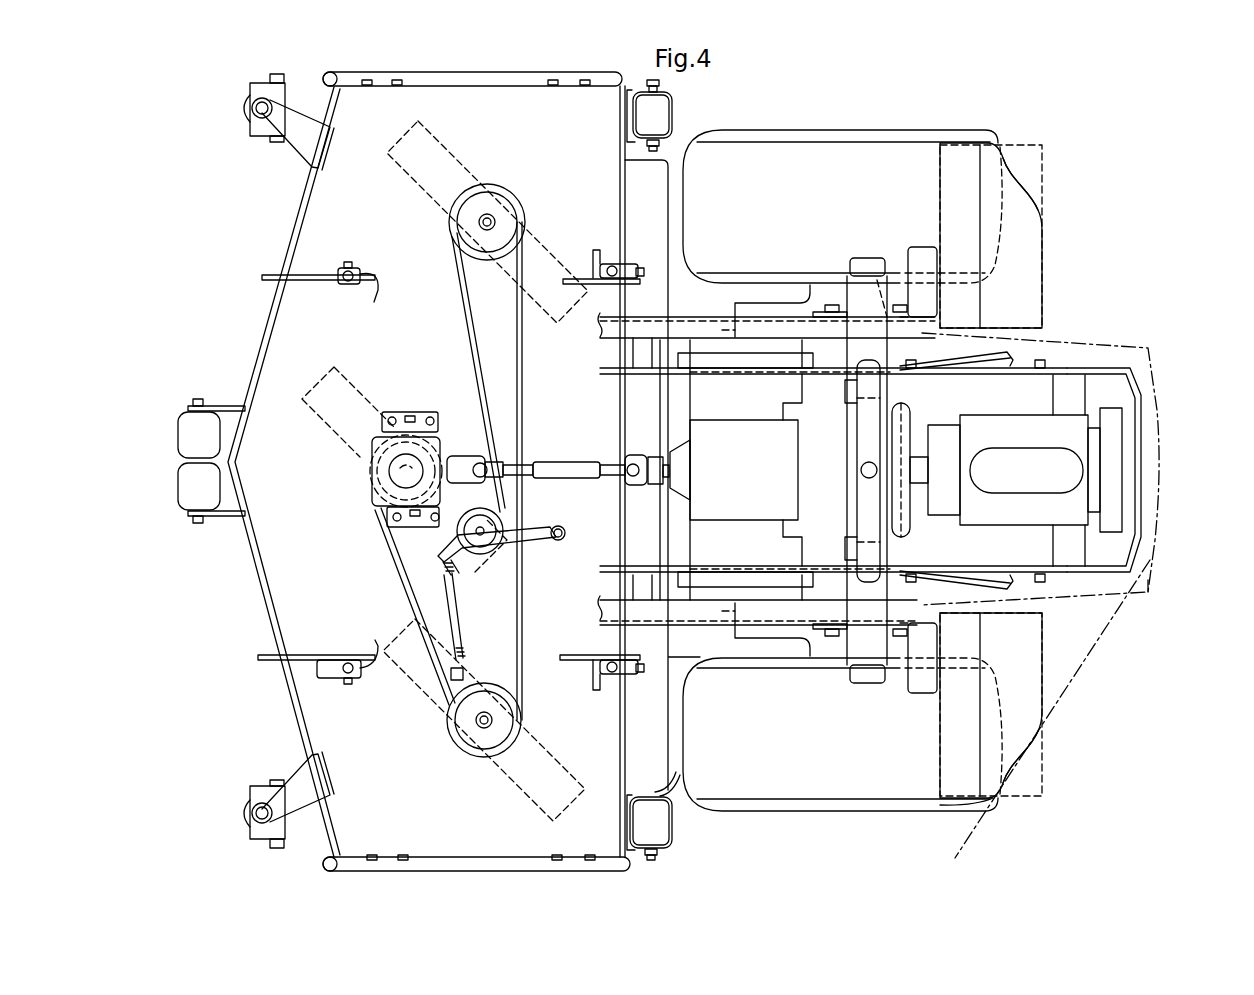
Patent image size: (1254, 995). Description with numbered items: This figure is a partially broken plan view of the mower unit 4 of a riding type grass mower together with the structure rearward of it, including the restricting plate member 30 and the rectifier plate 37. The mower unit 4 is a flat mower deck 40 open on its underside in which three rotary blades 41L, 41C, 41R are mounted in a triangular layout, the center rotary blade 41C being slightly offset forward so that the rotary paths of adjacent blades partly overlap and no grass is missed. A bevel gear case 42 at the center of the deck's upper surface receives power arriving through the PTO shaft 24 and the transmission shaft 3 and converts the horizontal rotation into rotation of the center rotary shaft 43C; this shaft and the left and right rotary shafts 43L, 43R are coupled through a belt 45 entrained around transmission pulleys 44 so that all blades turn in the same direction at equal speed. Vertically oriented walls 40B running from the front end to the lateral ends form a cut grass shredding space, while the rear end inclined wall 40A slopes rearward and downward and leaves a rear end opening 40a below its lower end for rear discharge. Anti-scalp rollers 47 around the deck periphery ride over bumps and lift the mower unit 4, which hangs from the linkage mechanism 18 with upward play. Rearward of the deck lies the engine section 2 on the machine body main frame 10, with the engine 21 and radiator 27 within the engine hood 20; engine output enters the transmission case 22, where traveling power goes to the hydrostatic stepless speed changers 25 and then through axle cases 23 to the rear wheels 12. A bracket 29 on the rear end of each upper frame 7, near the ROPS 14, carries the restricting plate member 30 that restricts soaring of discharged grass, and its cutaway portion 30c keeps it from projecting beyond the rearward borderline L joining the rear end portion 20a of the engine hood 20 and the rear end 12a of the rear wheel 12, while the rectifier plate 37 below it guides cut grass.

The engine section 2 is at (1176, 379).
The transmission shaft 3 is at (566, 462).
The mower unit 4 is at (229, 718).
The upper frame 7 is at (705, 345).
The machine body main frame 10 is at (973, 378).
The rear wheel 12 is at (838, 132).
The rear end of rear wheel 12a is at (997, 806).
The ROPS 14 is at (866, 257).
The linkage mechanism 18 is at (300, 282).
The engine hood 20 is at (1100, 337).
The rear end portion of engine hood 20a is at (1148, 595).
The engine 21 is at (1113, 475).
The transmission case 22 is at (795, 458).
The axle case 23 is at (770, 303).
The PTO shaft 24 is at (672, 470).
The hydrostatic stepless speed changer 25 is at (693, 402).
The radiator 27 is at (858, 500).
The bracket 29 is at (921, 247).
The restricting plate member 30 is at (1054, 262).
The cutaway portion 30c is at (1018, 180).
The rectifier plate 37 is at (1015, 358).
The mower deck 40 is at (252, 348).
The rear end inclined wall 40A is at (657, 222).
The rear end opening 40a is at (685, 647).
The vertically oriented wall 40B is at (466, 78).
The right rotary blade 41R is at (418, 180).
The left rotary blade 41L is at (413, 660).
The center rotary blade 41C is at (352, 437).
The bevel gear case 42 is at (372, 496).
The rotary shaft of right rotary blade 43R is at (493, 220).
The rotary shaft of left rotary blade 43L is at (492, 720).
The rotary shaft of center rotary blade 43C is at (386, 470).
The transmission pulley 44 is at (478, 258).
The belt 45 is at (472, 343).
The anti-scalp roller 47 is at (250, 108).
The rearward borderline L is at (1103, 648).